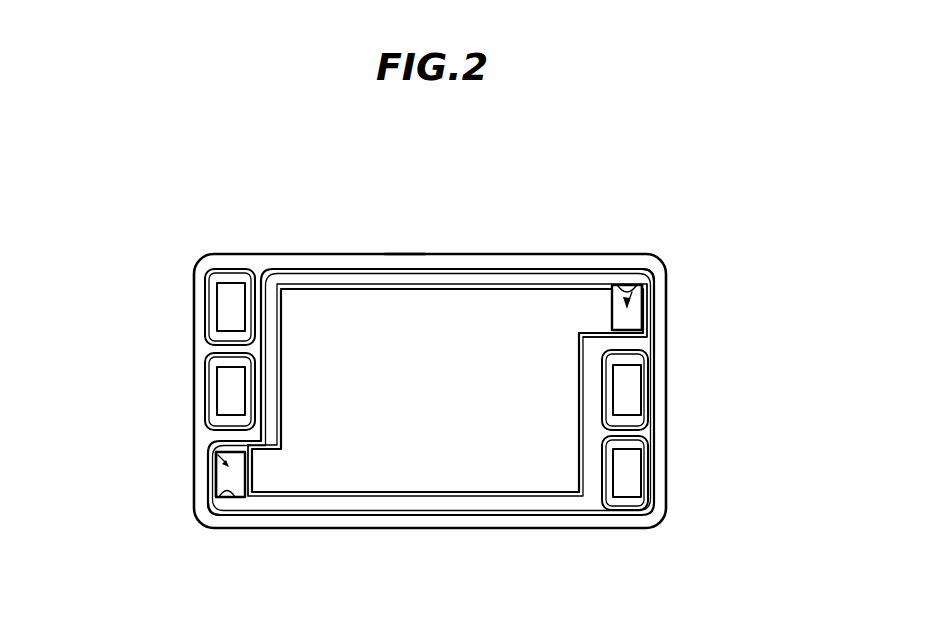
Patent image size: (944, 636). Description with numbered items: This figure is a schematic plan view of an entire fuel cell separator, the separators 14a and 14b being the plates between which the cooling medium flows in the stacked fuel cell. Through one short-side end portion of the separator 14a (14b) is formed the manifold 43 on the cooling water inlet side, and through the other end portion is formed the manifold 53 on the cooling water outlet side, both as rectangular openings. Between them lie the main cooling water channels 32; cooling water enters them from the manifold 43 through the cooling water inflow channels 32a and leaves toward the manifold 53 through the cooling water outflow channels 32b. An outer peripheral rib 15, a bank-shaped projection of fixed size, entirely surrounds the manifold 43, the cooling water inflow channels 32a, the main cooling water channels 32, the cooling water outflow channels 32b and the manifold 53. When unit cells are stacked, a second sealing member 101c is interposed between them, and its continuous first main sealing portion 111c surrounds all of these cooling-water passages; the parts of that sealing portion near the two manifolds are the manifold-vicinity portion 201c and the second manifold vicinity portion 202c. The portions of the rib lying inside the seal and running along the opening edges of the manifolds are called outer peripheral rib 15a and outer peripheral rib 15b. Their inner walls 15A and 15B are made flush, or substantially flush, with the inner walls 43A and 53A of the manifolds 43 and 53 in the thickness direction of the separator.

The separator 14a is at (430, 367).
The separator 14b is at (511, 254).
The second sealing member 101c is at (402, 252).
The outer peripheral rib 15 is at (375, 284).
The first main sealing portion 111c is at (455, 269).
The manifold-vicinity portion 201c is at (653, 270).
The second manifold vicinity portion 202c is at (212, 498).
The main cooling water channels 32 is at (430, 396).
The cooling water inflow channels 32a is at (600, 318).
The cooling water outflow channels 32b is at (253, 473).
The manifold on the cooling water inlet side 43 is at (643, 291).
The inner wall of manifold 43A is at (632, 292).
The inner wall of outer peripheral rib 15A is at (685, 255).
The outer peripheral rib 15a is at (643, 303).
The manifold on the cooling water outlet side 53 is at (216, 452).
The inner wall of manifold 53A is at (226, 497).
The inner wall of outer peripheral rib 15B is at (226, 544).
The outer peripheral rib 15b is at (215, 472).